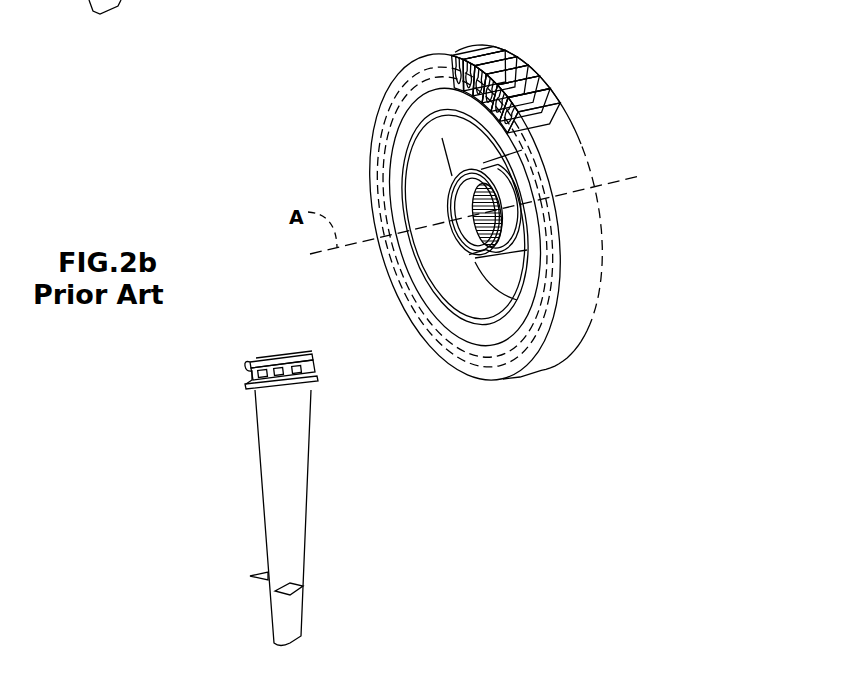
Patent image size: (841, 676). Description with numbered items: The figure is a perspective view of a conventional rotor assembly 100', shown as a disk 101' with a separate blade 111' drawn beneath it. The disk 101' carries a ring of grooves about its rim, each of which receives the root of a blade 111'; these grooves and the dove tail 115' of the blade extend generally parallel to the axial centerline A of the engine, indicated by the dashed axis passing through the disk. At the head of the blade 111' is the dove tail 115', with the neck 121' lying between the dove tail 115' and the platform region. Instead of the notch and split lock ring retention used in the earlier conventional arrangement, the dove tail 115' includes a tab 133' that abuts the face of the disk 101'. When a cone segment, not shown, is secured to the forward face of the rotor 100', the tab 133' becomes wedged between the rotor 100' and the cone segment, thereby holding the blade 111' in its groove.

The rotor assembly 100' is at (423, 340).
The disk 101' is at (453, 217).
The blade 111' is at (326, 482).
The dove tail 115' is at (307, 350).
The neck 121' is at (326, 355).
The tab 133' is at (279, 351).